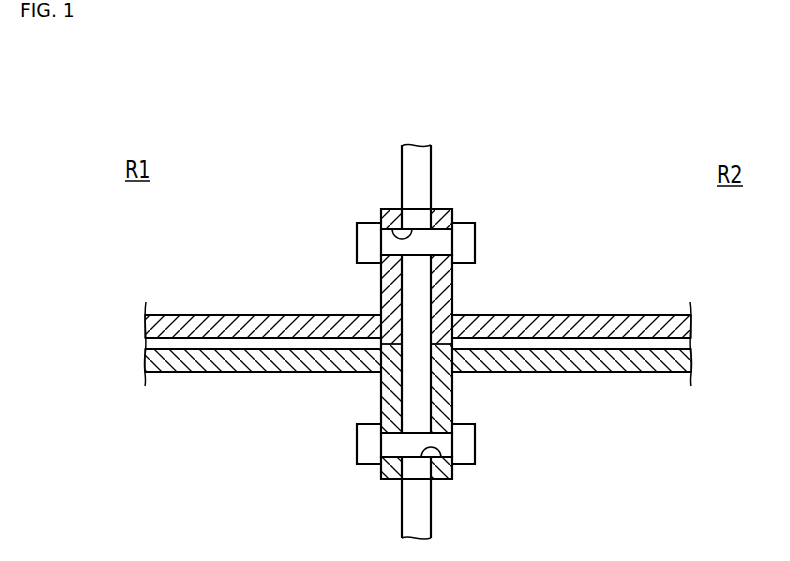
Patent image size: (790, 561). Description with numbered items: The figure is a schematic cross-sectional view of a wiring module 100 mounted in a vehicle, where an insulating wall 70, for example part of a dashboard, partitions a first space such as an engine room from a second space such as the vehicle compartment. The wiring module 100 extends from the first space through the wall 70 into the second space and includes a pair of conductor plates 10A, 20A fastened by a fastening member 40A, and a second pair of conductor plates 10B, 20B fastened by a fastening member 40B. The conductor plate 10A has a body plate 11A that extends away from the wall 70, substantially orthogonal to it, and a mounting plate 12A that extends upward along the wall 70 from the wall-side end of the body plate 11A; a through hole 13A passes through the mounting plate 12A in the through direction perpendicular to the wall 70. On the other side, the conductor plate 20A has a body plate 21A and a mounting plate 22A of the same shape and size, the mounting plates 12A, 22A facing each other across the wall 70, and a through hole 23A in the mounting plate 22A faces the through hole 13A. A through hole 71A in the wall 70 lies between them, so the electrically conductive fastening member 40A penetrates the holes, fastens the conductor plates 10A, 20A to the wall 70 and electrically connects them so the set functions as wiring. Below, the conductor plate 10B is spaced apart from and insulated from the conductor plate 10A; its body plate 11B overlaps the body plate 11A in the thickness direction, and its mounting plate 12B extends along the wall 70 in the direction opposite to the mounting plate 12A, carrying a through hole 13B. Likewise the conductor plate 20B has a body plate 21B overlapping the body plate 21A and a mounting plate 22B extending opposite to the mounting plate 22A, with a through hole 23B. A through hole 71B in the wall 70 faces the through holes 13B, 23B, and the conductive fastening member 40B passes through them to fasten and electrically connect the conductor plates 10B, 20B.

The wiring module 100 is at (540, 190).
The wall 70 is at (416, 152).
The through hole 71A is at (388, 208).
The through hole 71B is at (443, 471).
The fastening member 40A is at (468, 223).
The fastening member 40B is at (368, 465).
The through hole 13A is at (394, 252).
The through hole 23A is at (439, 252).
The through hole 13B is at (394, 436).
The through hole 23B is at (439, 436).
The conductor plate 10A is at (278, 248).
The body plate 11A is at (190, 315).
The mounting plate 12A is at (381, 291).
The conductor plate 20A is at (670, 248).
The body plate 21A is at (648, 315).
The mounting plate 22A is at (452, 291).
The conductor plate 10B is at (278, 443).
The body plate 11B is at (190, 372).
The mounting plate 12B is at (381, 394).
The conductor plate 20B is at (670, 443).
The body plate 21B is at (648, 372).
The mounting plate 22B is at (452, 394).